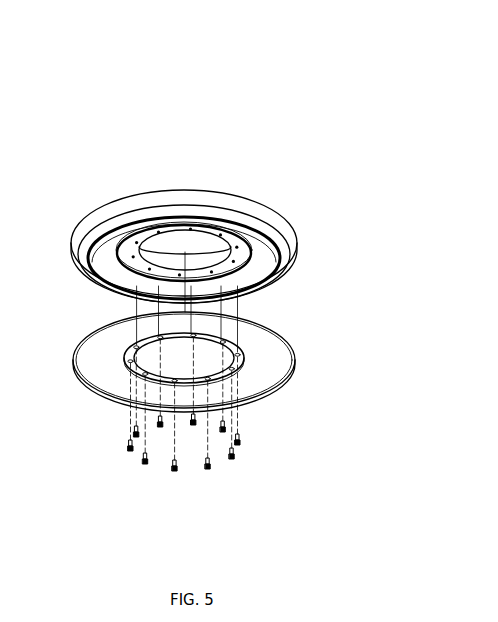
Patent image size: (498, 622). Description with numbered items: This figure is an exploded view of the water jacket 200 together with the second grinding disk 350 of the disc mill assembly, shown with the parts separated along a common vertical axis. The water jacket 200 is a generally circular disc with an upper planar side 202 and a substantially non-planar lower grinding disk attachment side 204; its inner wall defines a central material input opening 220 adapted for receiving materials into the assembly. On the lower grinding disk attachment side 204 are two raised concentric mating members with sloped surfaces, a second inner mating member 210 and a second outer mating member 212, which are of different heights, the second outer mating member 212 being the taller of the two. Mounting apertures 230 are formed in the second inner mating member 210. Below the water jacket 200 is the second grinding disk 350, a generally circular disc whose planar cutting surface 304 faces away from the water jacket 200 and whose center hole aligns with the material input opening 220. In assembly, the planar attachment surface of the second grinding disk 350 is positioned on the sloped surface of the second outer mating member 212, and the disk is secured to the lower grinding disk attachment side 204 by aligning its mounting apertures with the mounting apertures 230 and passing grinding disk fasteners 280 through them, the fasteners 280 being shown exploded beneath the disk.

The water jacket 200 is at (196, 235).
The upper planar side 202 is at (113, 195).
The lower grinding disk attachment side 204 is at (97, 253).
The second inner mating member 210 is at (246, 255).
The second outer mating member 212 is at (289, 252).
The material input opening 220 is at (198, 243).
The mounting apertures 230 is at (158, 231).
The planar cutting surface 304 is at (90, 370).
The second grinding disk 350 is at (184, 395).
The grinding disk fasteners 280 is at (129, 452).